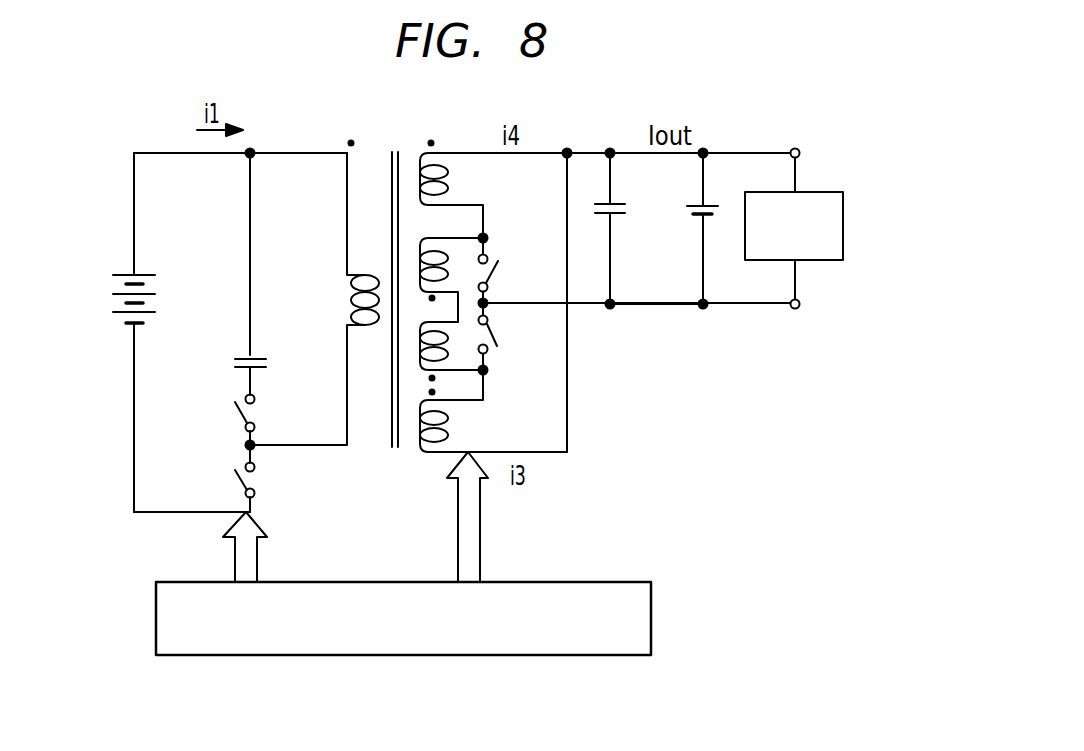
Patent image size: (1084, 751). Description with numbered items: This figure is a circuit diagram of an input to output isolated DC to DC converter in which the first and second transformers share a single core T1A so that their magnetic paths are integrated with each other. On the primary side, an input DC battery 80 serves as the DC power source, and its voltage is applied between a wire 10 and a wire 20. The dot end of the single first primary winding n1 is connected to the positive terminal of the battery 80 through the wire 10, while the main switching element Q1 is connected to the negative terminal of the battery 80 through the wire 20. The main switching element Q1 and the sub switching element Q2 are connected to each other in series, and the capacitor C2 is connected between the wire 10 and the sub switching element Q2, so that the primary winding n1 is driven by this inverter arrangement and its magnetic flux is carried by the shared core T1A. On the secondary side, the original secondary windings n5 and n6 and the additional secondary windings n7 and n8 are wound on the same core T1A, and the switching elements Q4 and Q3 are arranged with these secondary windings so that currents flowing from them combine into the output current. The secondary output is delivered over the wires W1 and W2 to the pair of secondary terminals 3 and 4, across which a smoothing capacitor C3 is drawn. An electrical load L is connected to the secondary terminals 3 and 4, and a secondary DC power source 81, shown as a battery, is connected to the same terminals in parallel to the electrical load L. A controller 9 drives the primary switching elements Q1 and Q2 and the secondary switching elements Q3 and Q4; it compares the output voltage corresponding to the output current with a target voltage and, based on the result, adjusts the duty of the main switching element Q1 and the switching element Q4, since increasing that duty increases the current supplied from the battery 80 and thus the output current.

The input DC battery 80 is at (104, 280).
The wire 10 is at (408, 266).
The wire 20 is at (167, 512).
The secondary terminal 3 is at (630, 153).
The secondary terminal 4 is at (673, 306).
The secondary DC power source 81 is at (684, 220).
The controller 9 is at (651, 617).
The electrical load L is at (825, 192).
The single core T1A is at (392, 283).
The first primary winding n1 is at (314, 299).
The secondary winding n5 is at (493, 195).
The secondary winding n6 is at (493, 411).
The secondary winding n7 is at (451, 280).
The secondary winding n8 is at (451, 345).
The main switching element Q1 is at (227, 482).
The sub switching element Q2 is at (227, 417).
The switching element Q3 is at (507, 336).
The switching element Q4 is at (507, 270).
The capacitor C2 is at (233, 371).
The smoothing capacitor C3 is at (630, 228).
The output wire W1 is at (586, 153).
The output wire W2 is at (592, 306).